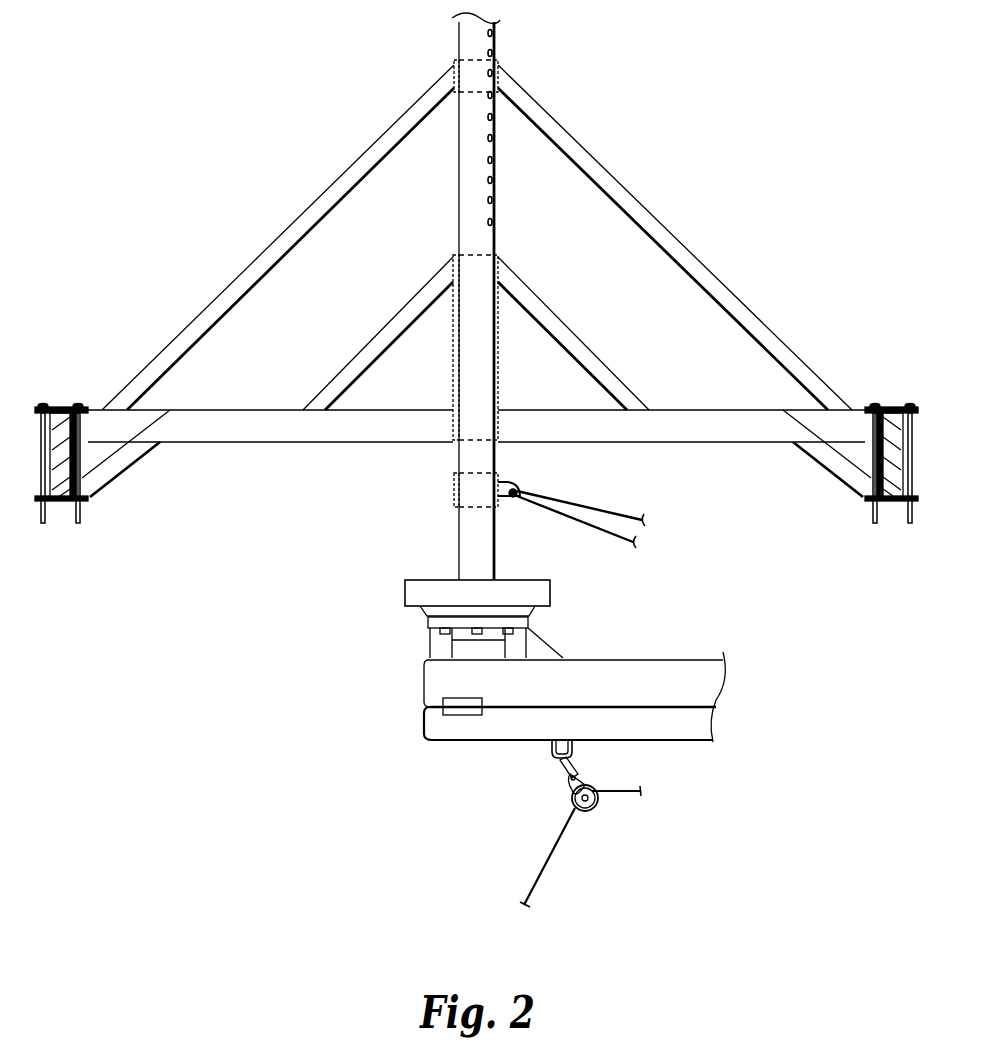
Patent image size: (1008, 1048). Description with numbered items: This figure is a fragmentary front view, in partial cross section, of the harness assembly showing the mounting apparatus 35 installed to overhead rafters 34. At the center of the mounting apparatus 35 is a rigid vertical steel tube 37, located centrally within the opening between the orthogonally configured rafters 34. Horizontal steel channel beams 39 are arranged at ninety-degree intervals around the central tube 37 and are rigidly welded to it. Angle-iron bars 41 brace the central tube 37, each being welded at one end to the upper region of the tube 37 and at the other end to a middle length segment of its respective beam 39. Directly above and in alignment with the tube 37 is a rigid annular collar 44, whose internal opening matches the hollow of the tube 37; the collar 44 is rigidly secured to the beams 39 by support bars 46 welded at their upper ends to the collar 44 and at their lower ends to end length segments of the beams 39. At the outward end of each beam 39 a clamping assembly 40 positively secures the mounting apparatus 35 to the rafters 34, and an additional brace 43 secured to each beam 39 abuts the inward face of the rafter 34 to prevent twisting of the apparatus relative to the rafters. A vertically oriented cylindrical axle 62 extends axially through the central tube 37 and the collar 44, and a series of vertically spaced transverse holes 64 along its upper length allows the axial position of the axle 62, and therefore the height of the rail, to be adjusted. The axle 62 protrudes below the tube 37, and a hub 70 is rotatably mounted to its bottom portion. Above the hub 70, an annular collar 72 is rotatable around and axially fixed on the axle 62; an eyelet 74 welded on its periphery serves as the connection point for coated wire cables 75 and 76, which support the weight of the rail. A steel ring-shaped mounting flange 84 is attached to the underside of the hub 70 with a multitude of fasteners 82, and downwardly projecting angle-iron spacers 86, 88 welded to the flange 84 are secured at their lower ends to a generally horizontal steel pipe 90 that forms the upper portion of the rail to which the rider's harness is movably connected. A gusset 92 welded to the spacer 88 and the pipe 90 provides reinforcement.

The overhead rafters 34 is at (64, 498).
The mounting apparatus 35 is at (640, 120).
The rigid vertical tube 37 is at (498, 338).
The beams 39 is at (342, 436).
The clamping assembly 40 is at (36, 388).
The bars 41 is at (378, 346).
The brace 43 is at (120, 452).
The annular collar 44 is at (497, 70).
The support bars 46 is at (300, 222).
The axle 62 is at (463, 207).
The holes 64 is at (495, 182).
The hub 70 is at (528, 592).
The annular collar 72 is at (455, 497).
The eyelet 74 is at (512, 482).
The wire cable 75 is at (636, 510).
The wire cable 76 is at (640, 538).
The fasteners 82 is at (436, 640).
The mounting flange 84 is at (432, 622).
The spacer 86 is at (430, 655).
The spacer 88 is at (530, 628).
The steel pipe 90 is at (660, 682).
The gusset 92 is at (513, 642).